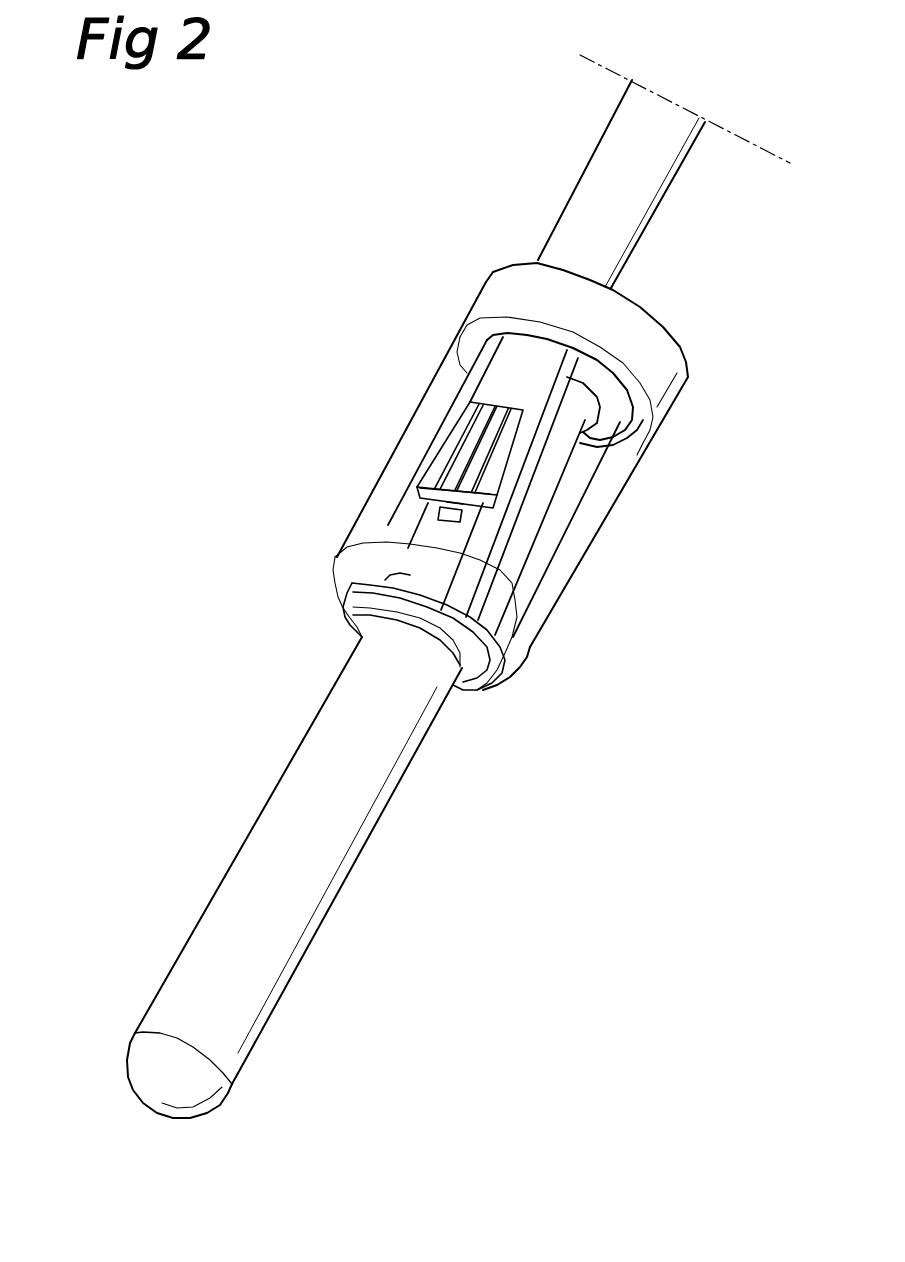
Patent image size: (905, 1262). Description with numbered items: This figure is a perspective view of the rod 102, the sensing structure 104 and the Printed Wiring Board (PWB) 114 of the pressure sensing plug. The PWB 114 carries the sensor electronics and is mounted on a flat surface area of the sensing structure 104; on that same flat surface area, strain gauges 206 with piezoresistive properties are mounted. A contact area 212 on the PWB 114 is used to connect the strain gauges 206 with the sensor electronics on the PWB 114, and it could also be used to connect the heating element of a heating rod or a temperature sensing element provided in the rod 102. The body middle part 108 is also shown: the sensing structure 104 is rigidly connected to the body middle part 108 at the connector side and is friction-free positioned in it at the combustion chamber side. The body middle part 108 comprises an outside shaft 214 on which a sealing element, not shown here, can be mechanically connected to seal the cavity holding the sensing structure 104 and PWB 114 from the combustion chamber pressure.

The rod 102 is at (305, 877).
The sensing structure 104 is at (564, 487).
The body middle part 108 is at (552, 476).
The printed wiring board (PWB) 114 is at (664, 171).
The strain gauges 206 is at (564, 549).
The contact area 212 is at (414, 455).
The outside shaft 214 is at (366, 616).